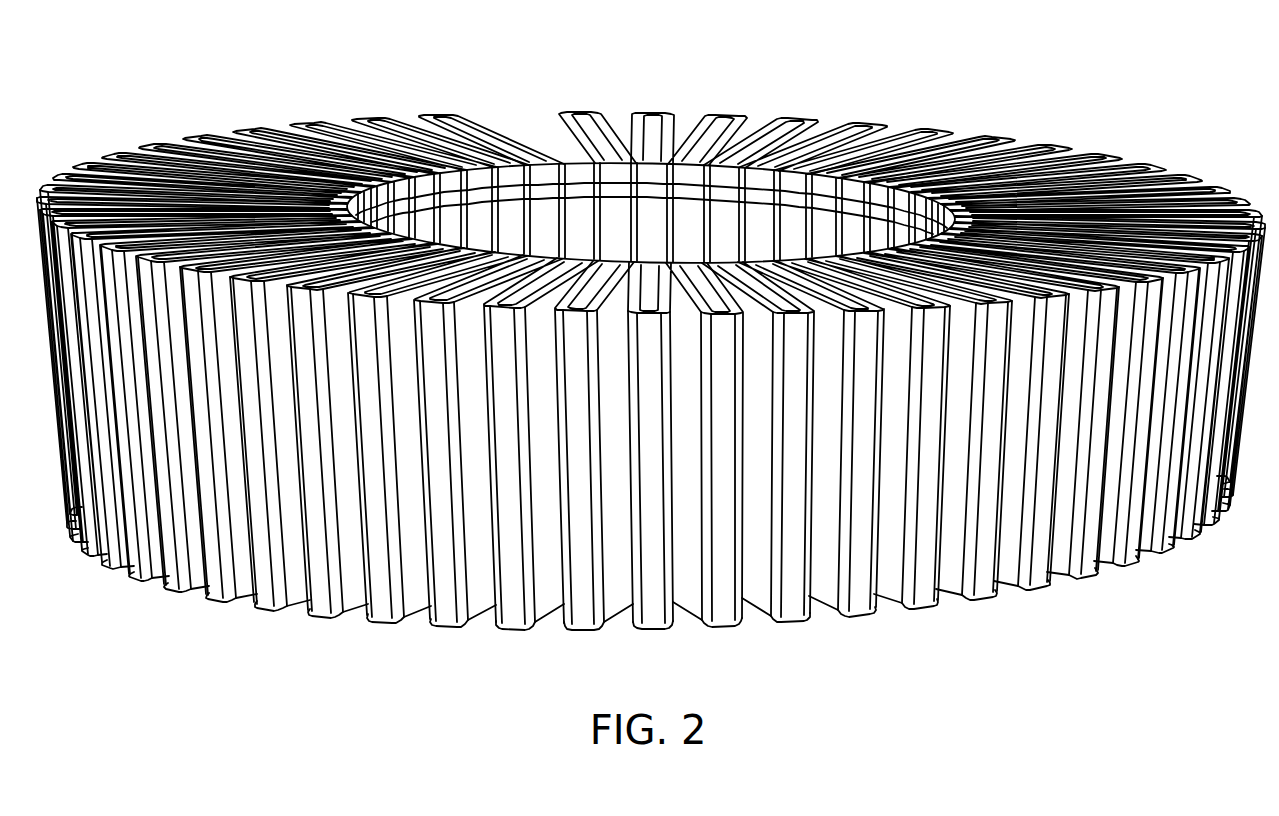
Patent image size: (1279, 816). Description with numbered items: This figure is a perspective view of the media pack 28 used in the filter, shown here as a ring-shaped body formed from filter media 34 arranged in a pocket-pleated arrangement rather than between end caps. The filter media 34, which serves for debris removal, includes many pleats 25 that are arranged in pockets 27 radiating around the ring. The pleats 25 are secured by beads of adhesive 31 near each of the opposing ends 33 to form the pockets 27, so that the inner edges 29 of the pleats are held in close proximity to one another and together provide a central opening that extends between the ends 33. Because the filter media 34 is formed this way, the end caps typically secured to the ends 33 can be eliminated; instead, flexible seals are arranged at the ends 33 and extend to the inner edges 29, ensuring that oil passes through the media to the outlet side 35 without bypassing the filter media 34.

The media pack 28 is at (651, 324).
The filter media 34 is at (1103, 157).
The pleats 25 is at (927, 127).
The inner edges 29 is at (792, 183).
The ends 33 is at (600, 150).
The outlet side 35 is at (510, 160).
The beads of adhesive 31 is at (590, 266).
The pockets 27 is at (698, 275).